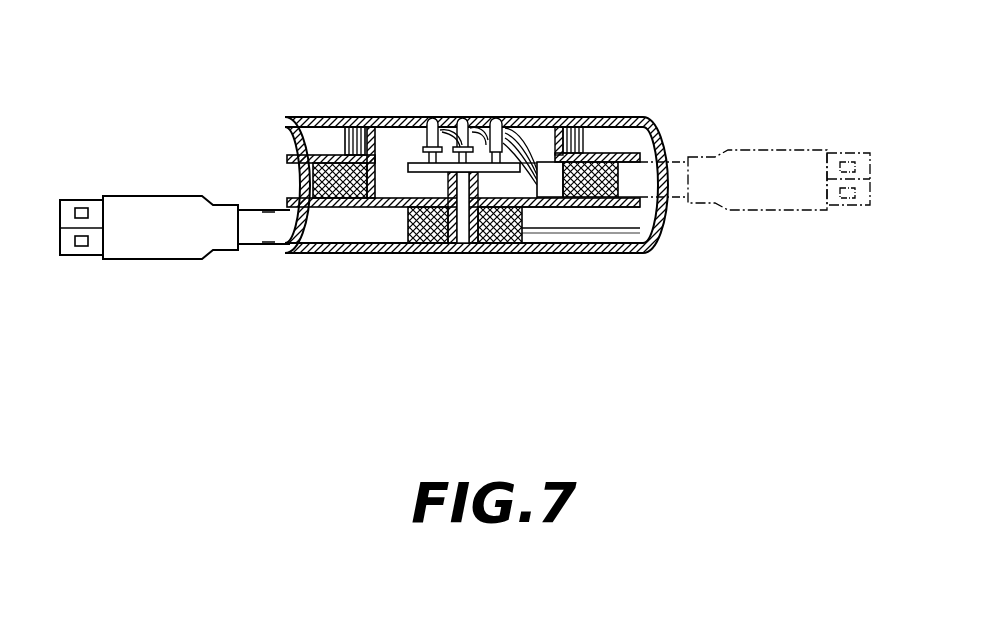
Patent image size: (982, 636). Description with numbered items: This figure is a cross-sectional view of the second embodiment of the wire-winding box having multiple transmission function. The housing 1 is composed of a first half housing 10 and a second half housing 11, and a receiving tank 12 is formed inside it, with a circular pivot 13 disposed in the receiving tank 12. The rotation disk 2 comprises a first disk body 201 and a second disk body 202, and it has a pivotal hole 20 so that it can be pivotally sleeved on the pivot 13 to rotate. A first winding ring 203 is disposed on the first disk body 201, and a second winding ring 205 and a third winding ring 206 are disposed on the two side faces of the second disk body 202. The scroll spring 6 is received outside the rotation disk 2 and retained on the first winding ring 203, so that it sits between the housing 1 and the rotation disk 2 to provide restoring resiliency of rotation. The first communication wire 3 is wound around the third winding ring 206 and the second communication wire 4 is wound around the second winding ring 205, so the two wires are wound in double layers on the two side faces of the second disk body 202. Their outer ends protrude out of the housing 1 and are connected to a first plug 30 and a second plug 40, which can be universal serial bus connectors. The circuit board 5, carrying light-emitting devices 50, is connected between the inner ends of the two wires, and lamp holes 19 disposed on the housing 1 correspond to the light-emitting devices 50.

The housing 1 is at (506, 190).
The rotation disk 2 is at (300, 207).
The first communication wire 3 is at (277, 247).
The second communication wire 4 is at (632, 185).
The circuit board 5 is at (430, 120).
The scroll spring 6 is at (345, 128).
The first half housing 10 is at (643, 118).
The second half housing 11 is at (624, 253).
The receiving tank 12 is at (636, 217).
The circular pivot 13 is at (462, 244).
The lamp holes 19 is at (459, 121).
The pivotal hole 20 is at (445, 168).
The first plug 30 is at (165, 240).
The second plug 40 is at (758, 167).
The light-emitting devices 50 is at (478, 122).
The first disk body 201 is at (592, 182).
The second disk body 202 is at (598, 208).
The first winding ring 203 is at (560, 127).
The second winding ring 205 is at (372, 208).
The third winding ring 206 is at (450, 215).